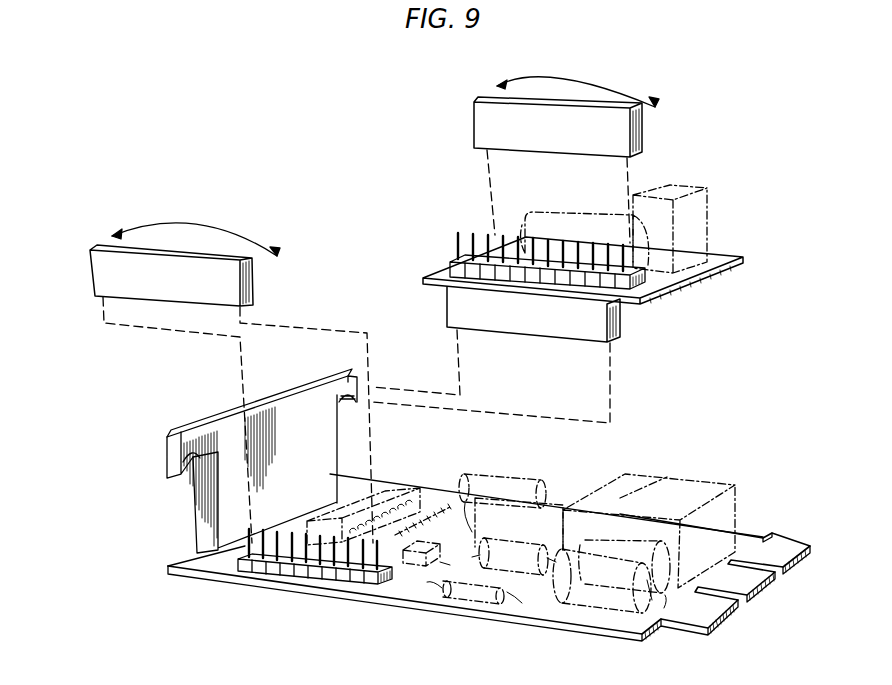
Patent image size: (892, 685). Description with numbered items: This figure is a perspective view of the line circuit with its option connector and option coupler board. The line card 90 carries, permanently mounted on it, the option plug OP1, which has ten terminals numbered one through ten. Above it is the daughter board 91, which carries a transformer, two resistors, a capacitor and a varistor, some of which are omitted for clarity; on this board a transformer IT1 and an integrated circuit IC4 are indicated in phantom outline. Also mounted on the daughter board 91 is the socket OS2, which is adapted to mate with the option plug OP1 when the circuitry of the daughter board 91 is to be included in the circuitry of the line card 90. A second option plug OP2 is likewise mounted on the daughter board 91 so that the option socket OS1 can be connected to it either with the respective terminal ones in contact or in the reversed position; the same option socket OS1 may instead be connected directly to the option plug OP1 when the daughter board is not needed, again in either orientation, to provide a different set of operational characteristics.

The line card 90 is at (760, 525).
The daughter board 91 is at (700, 273).
The option socket OS1 is at (476, 129).
The socket OS2 is at (535, 322).
The option plug OP1 is at (373, 580).
The second option plug OP2 is at (455, 268).
The integrated circuit IC4 is at (590, 220).
The transformer IT1 is at (703, 223).